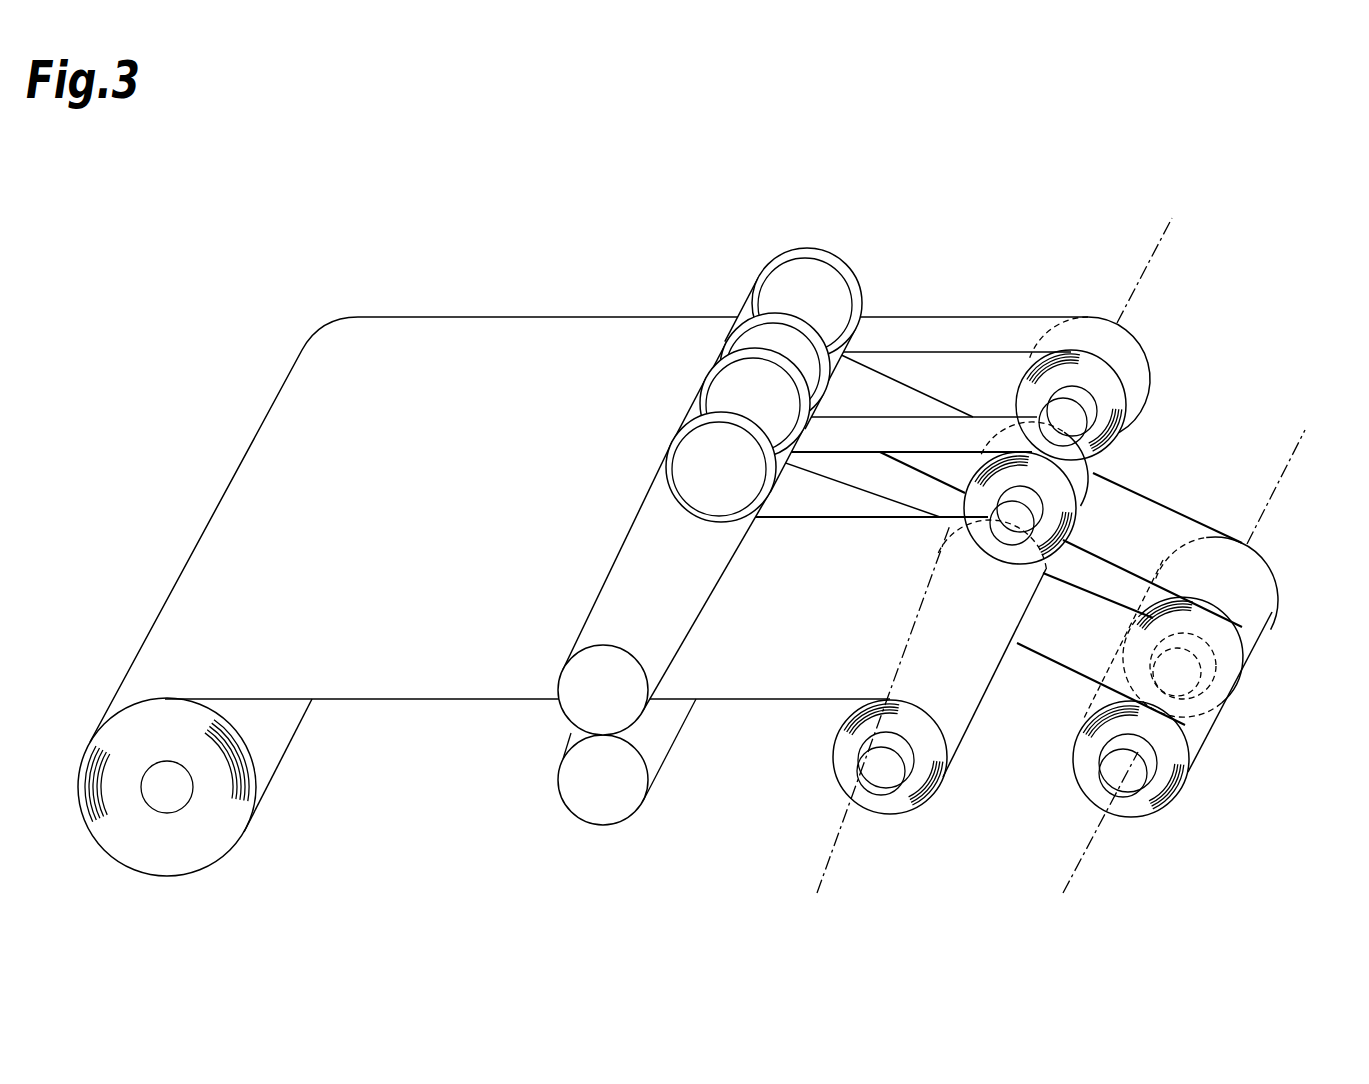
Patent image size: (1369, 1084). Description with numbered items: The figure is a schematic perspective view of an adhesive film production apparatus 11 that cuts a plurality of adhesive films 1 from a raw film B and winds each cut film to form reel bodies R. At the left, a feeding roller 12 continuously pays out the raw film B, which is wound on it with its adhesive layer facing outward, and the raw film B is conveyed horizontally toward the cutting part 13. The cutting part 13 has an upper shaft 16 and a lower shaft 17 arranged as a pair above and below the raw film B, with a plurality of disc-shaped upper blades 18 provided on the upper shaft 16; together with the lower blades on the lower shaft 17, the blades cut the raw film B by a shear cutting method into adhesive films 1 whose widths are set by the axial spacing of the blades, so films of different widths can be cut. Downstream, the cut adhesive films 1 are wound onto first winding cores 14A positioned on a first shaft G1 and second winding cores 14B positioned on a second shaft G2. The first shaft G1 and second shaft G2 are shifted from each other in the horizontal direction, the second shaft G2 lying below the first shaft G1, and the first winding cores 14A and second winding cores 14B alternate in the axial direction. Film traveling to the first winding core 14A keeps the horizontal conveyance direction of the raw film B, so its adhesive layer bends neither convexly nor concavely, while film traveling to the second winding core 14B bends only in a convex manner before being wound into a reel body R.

The adhesive film production apparatus 11 is at (345, 245).
The raw film B is at (417, 340).
The feeding roller 12 is at (167, 787).
The cutting part 13 is at (740, 255).
The upper shaft 16 is at (640, 578).
The lower shaft 17 is at (660, 737).
The upper blades 18 is at (822, 250).
The adhesive film 1 is at (936, 336).
The first winding core 14A is at (1107, 413).
The second winding core 14B is at (1188, 680).
The reel bodies R is at (1170, 345).
The first shaft G1 is at (827, 877).
The second shaft G2 is at (1068, 882).